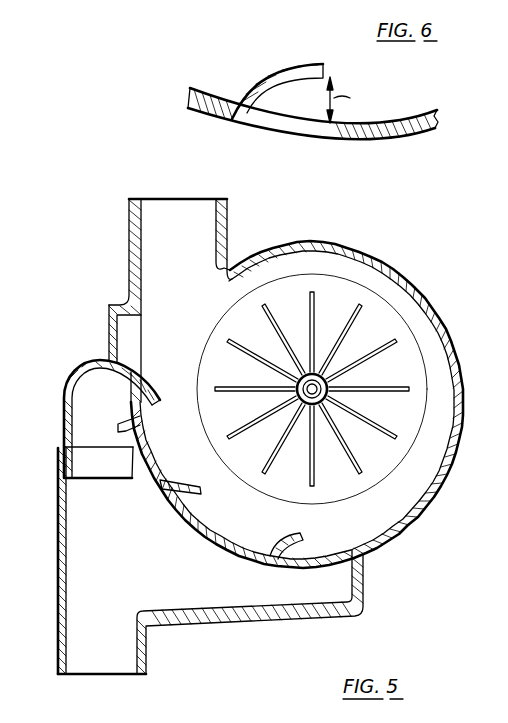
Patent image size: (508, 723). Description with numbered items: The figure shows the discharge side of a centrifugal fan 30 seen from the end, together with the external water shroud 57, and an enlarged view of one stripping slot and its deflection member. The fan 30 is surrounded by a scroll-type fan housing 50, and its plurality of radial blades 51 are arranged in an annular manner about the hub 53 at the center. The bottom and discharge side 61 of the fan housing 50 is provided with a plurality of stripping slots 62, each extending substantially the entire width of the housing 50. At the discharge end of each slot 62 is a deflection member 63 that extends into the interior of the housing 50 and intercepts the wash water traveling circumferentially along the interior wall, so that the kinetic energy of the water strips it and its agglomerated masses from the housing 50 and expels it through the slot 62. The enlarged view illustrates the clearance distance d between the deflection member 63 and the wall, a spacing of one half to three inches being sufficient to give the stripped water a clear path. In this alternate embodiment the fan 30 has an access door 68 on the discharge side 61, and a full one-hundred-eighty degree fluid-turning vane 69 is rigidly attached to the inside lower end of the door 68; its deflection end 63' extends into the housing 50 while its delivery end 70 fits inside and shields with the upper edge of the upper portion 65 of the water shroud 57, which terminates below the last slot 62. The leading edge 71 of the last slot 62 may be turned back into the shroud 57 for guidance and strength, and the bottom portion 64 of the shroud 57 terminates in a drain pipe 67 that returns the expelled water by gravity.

In FIG. 5, the centrifugal fan 30 is at (412, 279).
In FIG. 6, the fan housing 50 is at (405, 134).
In FIG. 5, the fan housing 50 is at (438, 487).
In FIG. 5, the radial blades 51 is at (346, 341).
In FIG. 5, the impeller hub 53 is at (342, 380).
In FIG. 5, the water shroud 57 is at (51, 582).
In FIG. 5, the discharge side 61 is at (129, 257).
In FIG. 6, the stripping slot 62 is at (298, 129).
In FIG. 5, the stripping slot 62 is at (132, 401).
In FIG. 6, the deflection member 63 is at (277, 79).
In FIG. 5, the deflection member 63 is at (231, 502).
In FIG. 5, the last deflection member 63' is at (153, 376).
In FIG. 5, the bottom portion 64 is at (362, 603).
In FIG. 5, the upper portion 65 is at (58, 630).
In FIG. 6, the drain pipe 67 is at (50, 9).
In FIG. 5, the drain pipe 67 is at (102, 665).
In FIG. 5, the access door 68 is at (109, 325).
In FIG. 5, the fluid-turning vane 69 is at (66, 386).
In FIG. 5, the delivery end 70 is at (73, 467).
In FIG. 5, the leading edge 71 is at (132, 480).
In FIG. 6, the clearance distance d is at (346, 100).